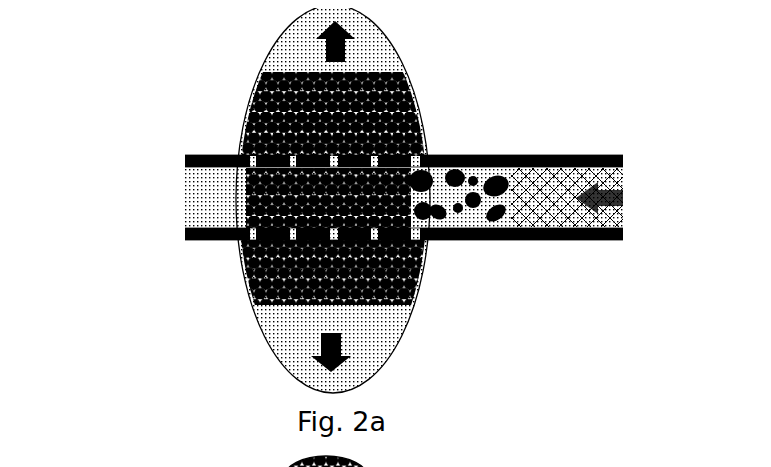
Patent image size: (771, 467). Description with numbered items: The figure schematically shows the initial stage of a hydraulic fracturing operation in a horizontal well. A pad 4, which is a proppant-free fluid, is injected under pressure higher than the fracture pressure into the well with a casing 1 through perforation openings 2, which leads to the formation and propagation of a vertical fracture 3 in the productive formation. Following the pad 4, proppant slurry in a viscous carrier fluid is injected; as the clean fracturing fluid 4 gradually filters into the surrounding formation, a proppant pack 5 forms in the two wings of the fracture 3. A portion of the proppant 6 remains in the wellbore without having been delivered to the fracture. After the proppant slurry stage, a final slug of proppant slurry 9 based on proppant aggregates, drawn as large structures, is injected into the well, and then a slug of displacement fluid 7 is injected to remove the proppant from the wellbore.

The casing 1 is at (618, 214).
The perforation openings 2 is at (423, 146).
The vertical fracture 3 is at (276, 21).
The pad 4 is at (281, 333).
The proppant pack 5 is at (232, 232).
The proppant 6 is at (338, 210).
The displacement fluid 7 is at (538, 199).
The proppant slurry 9 is at (463, 193).